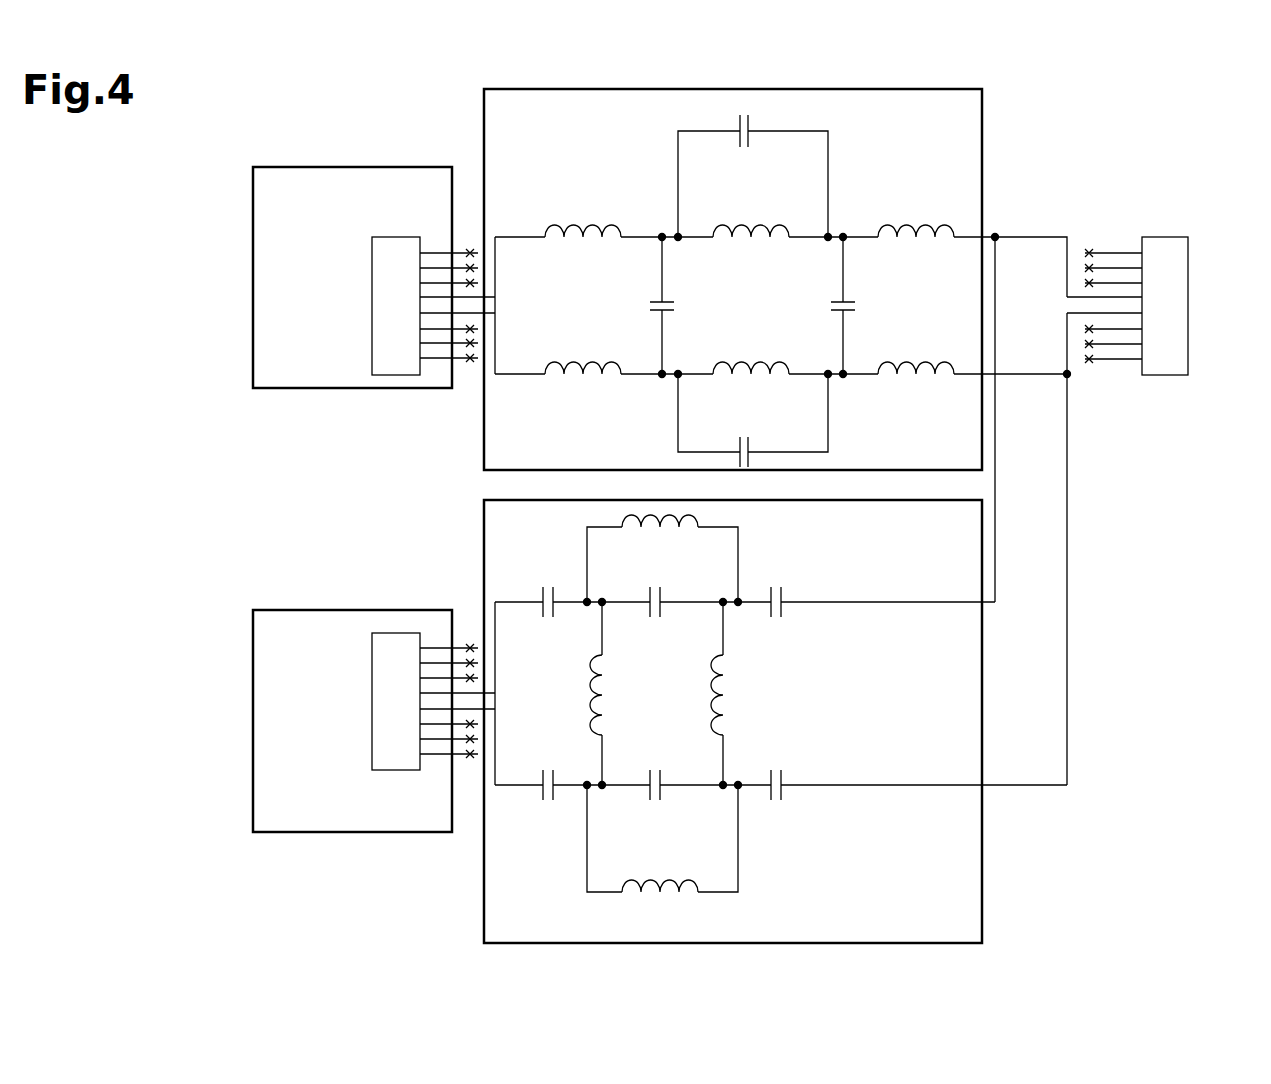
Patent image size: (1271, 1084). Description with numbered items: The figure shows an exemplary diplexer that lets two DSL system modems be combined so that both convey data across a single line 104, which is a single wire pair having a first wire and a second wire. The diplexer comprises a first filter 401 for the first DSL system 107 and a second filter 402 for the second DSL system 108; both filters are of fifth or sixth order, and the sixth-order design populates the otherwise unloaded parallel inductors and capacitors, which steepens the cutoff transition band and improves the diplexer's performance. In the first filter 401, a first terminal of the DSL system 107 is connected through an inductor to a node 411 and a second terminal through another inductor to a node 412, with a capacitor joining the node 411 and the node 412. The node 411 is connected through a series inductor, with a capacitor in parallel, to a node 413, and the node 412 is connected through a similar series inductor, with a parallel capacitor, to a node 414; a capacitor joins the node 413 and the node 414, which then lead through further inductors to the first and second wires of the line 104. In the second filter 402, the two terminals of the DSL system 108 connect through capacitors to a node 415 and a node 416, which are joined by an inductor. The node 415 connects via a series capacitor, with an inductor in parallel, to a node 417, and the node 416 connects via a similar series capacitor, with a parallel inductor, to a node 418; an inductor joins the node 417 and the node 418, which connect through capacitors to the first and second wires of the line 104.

The line 104 is at (1140, 281).
The first DSL system 107 is at (297, 390).
The second DSL system 108 is at (297, 610).
The first filter 401 is at (484, 422).
The second filter 402 is at (484, 563).
The node 411 is at (662, 227).
The node 412 is at (662, 389).
The node 413 is at (848, 227).
The node 414 is at (848, 389).
The node 415 is at (585, 616).
The node 416 is at (584, 774).
The node 417 is at (745, 616).
The node 418 is at (743, 774).